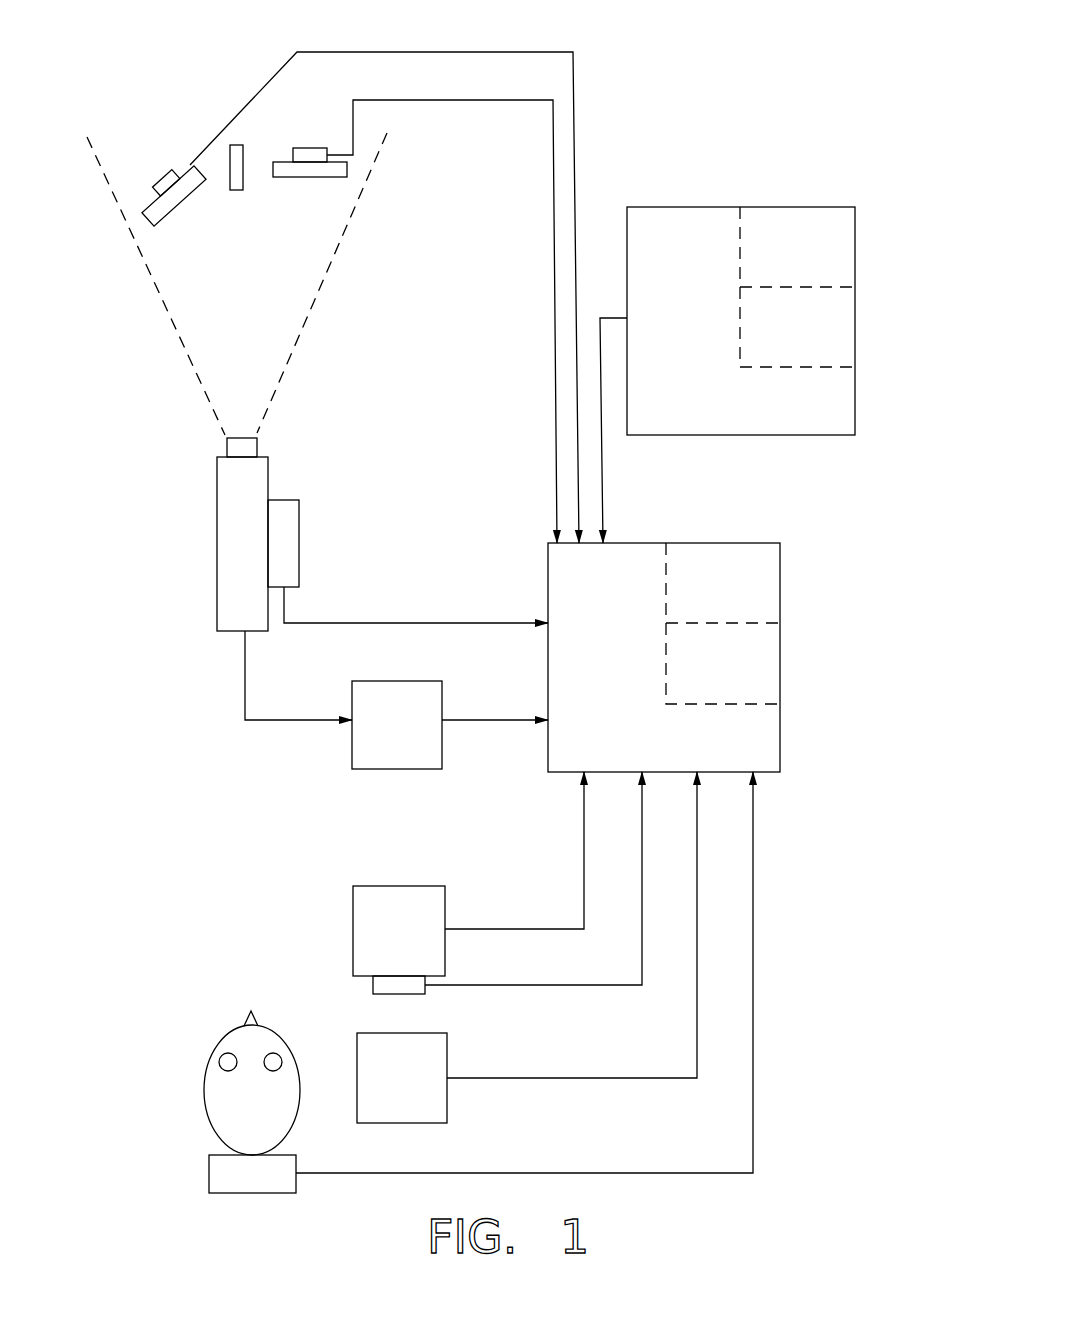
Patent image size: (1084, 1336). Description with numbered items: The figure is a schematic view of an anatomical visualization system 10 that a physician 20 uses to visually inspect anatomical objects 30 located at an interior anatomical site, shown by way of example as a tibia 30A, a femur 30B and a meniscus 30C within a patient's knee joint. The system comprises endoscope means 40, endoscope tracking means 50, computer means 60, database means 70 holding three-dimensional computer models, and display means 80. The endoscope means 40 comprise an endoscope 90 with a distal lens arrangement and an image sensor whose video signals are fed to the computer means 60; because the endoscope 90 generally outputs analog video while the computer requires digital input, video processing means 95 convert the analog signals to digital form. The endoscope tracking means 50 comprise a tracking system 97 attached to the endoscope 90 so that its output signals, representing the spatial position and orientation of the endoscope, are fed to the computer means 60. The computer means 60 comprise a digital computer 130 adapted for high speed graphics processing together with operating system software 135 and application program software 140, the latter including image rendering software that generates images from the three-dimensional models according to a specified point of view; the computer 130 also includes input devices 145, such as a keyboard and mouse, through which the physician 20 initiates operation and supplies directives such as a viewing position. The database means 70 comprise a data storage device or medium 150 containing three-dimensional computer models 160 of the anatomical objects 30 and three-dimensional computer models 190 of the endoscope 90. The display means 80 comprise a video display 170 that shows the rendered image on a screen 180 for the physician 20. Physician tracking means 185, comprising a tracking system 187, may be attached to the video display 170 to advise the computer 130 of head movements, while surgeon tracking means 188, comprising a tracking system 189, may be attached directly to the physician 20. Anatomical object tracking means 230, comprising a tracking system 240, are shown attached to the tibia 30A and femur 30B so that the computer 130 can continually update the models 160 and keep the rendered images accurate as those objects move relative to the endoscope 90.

The anatomical visualization system 10 is at (205, 838).
The physician 20 is at (193, 1042).
The anatomical objects 30 is at (240, 253).
The tibia 30A is at (177, 203).
The femur 30B is at (288, 175).
The meniscus 30C is at (243, 180).
The endoscope means 40 is at (240, 529).
The endoscope tracking means 50 is at (323, 505).
The computer means 60 is at (723, 679).
The database means 70 is at (762, 274).
The display means 80 is at (388, 901).
The endoscope 90 is at (222, 495).
The video processing means 95 is at (413, 762).
The tracking system 97 is at (300, 532).
The digital computer 130 is at (775, 757).
The operating system software 135 is at (722, 683).
The application program software 140 is at (720, 588).
The input devices 145 is at (413, 1113).
The data storage device or medium 150 is at (703, 215).
The 3-D computer models 160 is at (793, 250).
The video display 170 is at (447, 905).
The screen 180 is at (405, 935).
The physician tracking means 185 is at (382, 981).
The tracking system 187 is at (410, 990).
The surgeon tracking means 188 is at (227, 1162).
The tracking system 189 is at (257, 1185).
The 3-D computer models 190 is at (797, 345).
The anatomical object tracking means 230 is at (162, 167).
The tracking system 240 is at (157, 187).